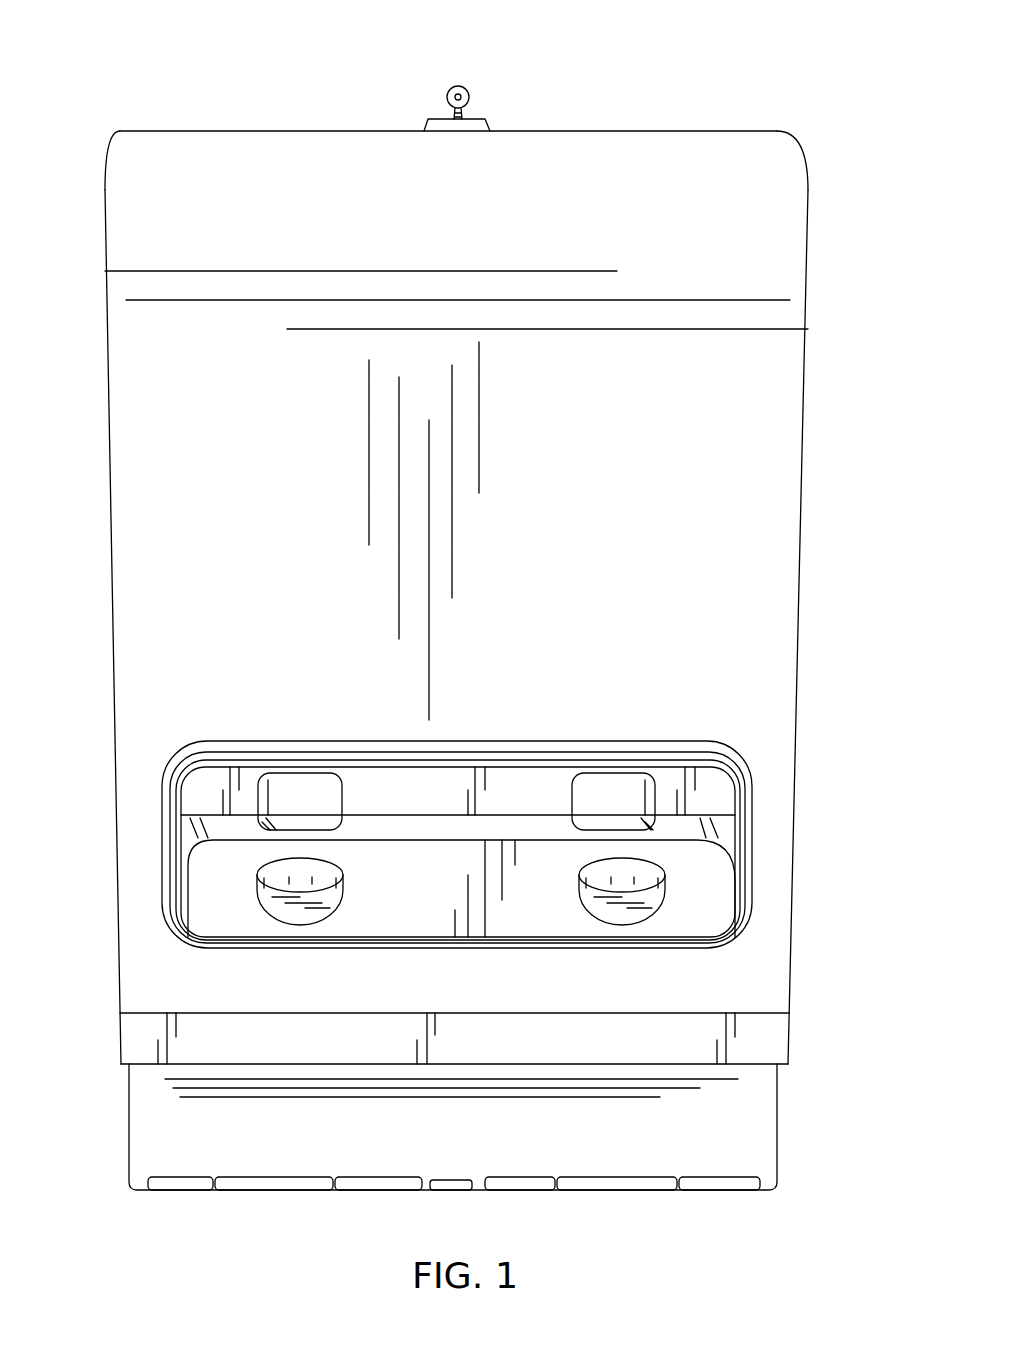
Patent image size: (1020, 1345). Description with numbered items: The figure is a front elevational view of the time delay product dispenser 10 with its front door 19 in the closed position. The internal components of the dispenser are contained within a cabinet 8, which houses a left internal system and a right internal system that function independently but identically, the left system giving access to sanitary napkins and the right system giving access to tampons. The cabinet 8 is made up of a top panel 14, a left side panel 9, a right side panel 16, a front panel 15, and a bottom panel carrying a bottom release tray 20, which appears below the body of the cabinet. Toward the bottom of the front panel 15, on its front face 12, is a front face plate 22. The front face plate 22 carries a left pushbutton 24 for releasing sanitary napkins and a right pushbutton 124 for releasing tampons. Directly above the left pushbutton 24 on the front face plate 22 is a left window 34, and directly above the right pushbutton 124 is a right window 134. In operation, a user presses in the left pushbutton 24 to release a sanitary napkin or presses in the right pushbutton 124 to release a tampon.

The time delay product dispenser 10 is at (323, 78).
The front face 12 is at (606, 419).
The top panel 14 is at (686, 131).
The front panel 15 is at (200, 160).
The right side panel 16 is at (806, 455).
The front door 19 is at (130, 455).
The cabinet 8 is at (105, 578).
The left side panel 9 is at (113, 688).
The front face plate 22 is at (597, 740).
The left window 34 is at (292, 795).
The right window 134 is at (628, 793).
The left pushbutton 24 is at (277, 908).
The right pushbutton 124 is at (653, 897).
The bottom release tray 20 is at (778, 1118).